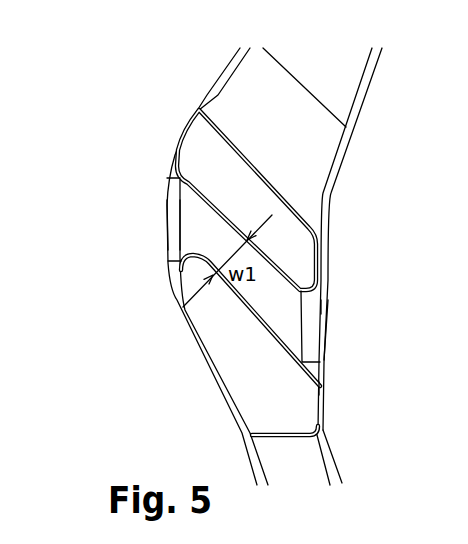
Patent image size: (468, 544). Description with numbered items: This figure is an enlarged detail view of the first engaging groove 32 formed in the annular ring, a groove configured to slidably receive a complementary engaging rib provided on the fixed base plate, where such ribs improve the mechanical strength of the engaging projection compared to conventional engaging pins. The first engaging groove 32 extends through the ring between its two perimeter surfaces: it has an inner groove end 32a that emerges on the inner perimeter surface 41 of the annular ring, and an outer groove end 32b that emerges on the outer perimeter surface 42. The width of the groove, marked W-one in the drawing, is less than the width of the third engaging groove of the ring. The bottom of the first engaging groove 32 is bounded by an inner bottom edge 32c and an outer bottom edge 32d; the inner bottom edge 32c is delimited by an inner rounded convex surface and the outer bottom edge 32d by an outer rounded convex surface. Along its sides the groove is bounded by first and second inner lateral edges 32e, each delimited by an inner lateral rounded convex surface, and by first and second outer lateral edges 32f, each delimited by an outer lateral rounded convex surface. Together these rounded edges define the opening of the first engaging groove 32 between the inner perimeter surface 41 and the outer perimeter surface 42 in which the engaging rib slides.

The first engaging groove 32 is at (257, 318).
The inner groove end 32a is at (327, 328).
The outer groove end 32b is at (168, 221).
The inner bottom edge 32c is at (310, 342).
The outer bottom edge 32d is at (173, 230).
The first and second inner lateral edge 32e is at (323, 307).
The first and second outer lateral edge 32f is at (177, 178).
The inner perimeter surface 41 is at (353, 132).
The outer perimeter surface 42 is at (218, 77).